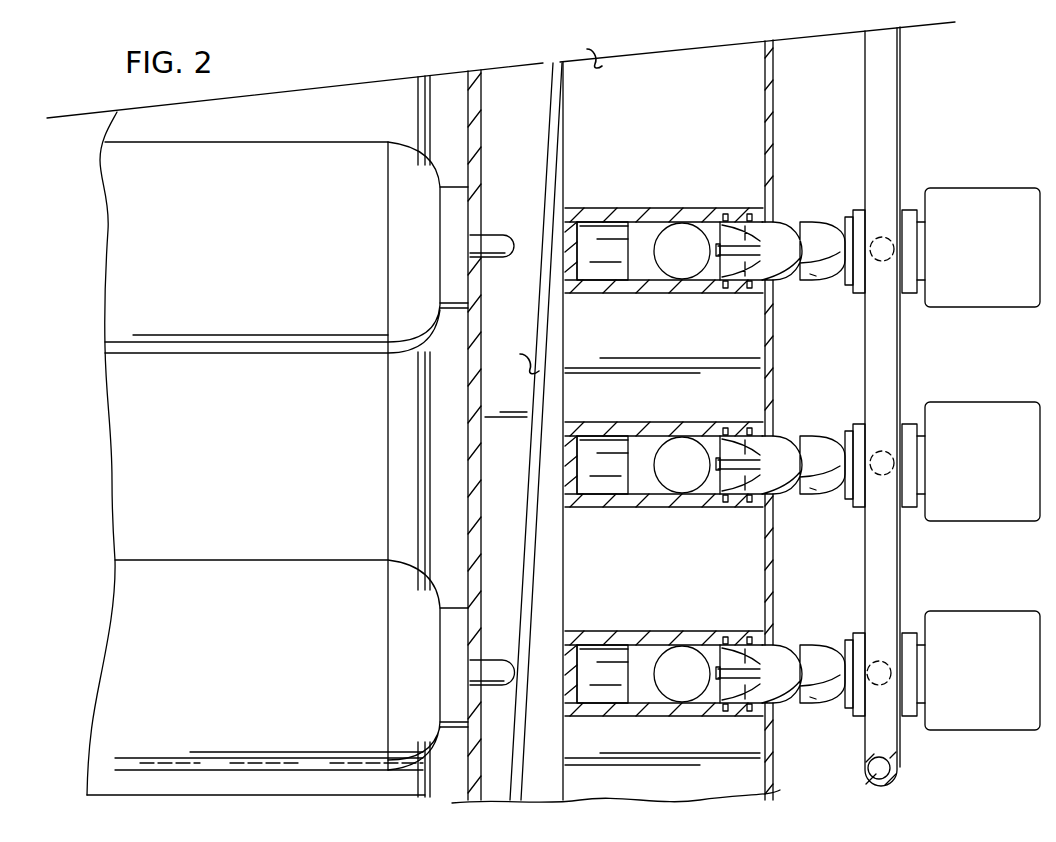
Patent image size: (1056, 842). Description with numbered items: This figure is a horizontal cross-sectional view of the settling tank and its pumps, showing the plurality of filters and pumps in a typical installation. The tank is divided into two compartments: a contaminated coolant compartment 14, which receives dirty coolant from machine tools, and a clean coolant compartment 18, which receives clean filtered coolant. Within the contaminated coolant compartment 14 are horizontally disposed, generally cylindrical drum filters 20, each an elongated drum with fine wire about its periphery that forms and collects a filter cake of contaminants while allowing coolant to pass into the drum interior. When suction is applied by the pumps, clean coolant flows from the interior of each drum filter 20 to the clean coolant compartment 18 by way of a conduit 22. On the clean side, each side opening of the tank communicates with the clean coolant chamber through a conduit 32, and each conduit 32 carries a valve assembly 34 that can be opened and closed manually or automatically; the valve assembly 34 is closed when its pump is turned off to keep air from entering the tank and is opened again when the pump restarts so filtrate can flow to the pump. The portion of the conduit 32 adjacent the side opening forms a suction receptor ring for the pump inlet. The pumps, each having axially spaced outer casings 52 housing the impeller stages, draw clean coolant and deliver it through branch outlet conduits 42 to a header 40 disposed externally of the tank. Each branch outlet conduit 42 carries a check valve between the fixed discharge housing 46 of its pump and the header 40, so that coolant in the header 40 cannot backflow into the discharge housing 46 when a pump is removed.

The contaminated coolant compartment 14 is at (244, 465).
The clean coolant compartment 18 is at (677, 327).
The drum filter 20 is at (219, 344).
The conduit 22 is at (492, 258).
The conduit 32 is at (630, 212).
The valve assembly 34 is at (660, 232).
The header 40 is at (866, 358).
The branch outlet conduit 42 is at (858, 205).
The discharge housing 46 is at (915, 294).
The outer casing 52 is at (815, 282).